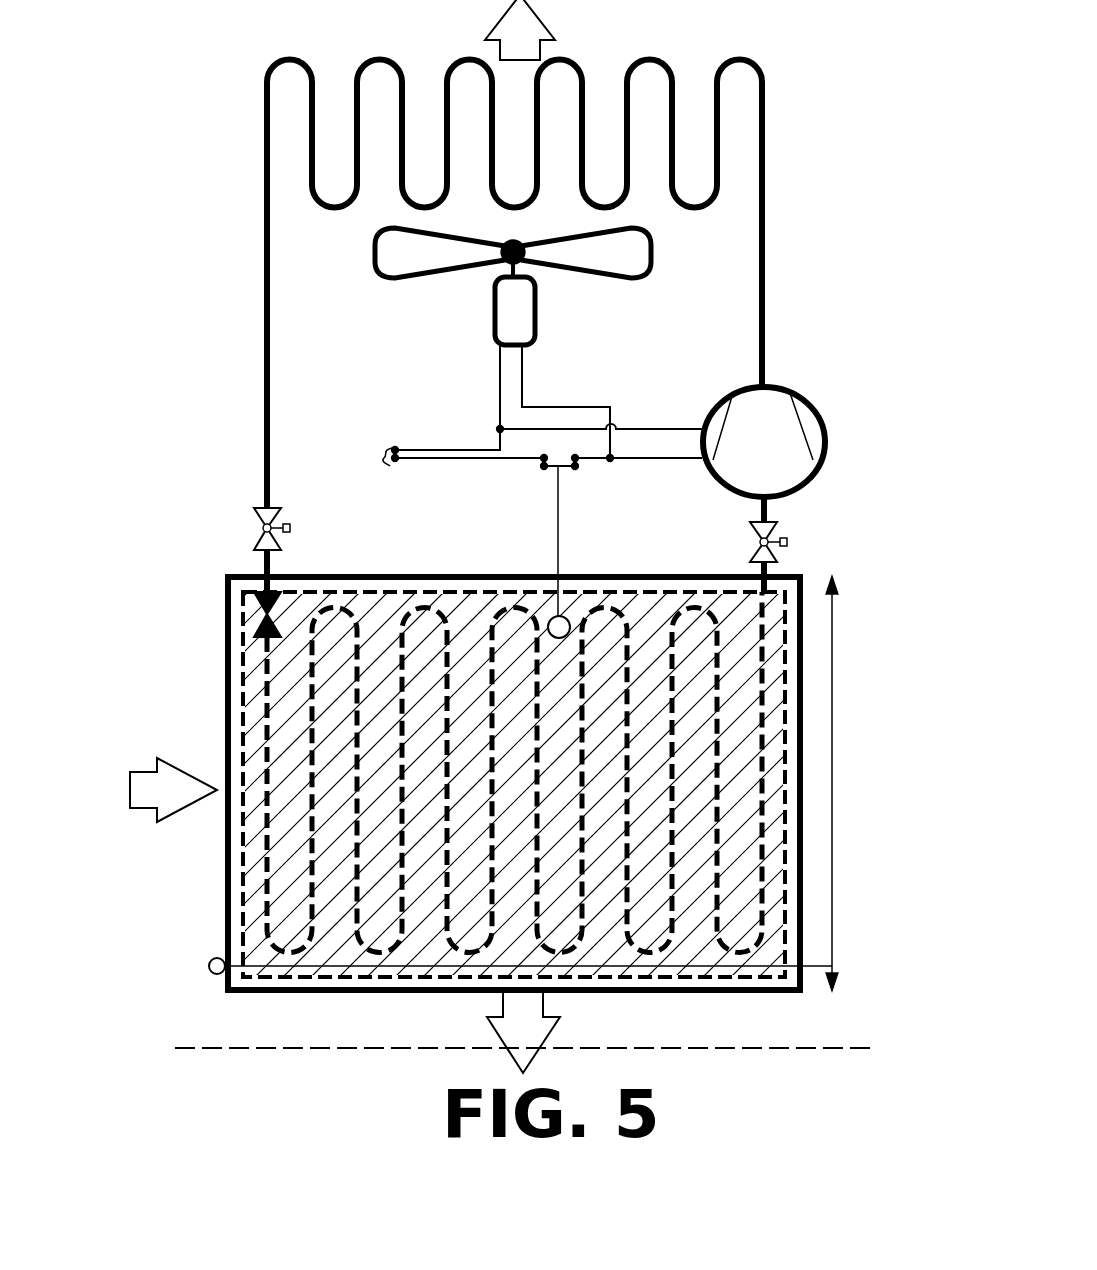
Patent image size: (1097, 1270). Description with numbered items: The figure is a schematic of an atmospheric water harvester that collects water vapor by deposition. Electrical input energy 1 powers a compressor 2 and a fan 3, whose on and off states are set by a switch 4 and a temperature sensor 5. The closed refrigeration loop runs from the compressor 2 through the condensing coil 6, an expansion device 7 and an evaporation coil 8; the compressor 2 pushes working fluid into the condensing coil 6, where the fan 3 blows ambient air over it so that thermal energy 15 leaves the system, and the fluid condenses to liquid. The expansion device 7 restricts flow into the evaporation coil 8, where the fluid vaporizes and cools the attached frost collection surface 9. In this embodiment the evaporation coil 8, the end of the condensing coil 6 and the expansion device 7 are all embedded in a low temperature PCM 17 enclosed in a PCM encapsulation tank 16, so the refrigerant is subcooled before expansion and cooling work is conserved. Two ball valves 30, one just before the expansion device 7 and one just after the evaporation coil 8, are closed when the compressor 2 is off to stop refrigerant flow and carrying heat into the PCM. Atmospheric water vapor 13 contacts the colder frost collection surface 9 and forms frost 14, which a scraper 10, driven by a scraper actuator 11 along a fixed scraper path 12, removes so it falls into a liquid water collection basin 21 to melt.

The input energy 1 is at (385, 462).
The compressor 2 is at (798, 448).
The fan 3 is at (503, 300).
The switch 4 is at (583, 465).
The temperature sensor 5 is at (550, 615).
The condensing coil 6 is at (640, 100).
The expansion device 7 is at (262, 598).
The evaporation coil 8 is at (395, 835).
The frost collection surface 9 is at (223, 942).
The scraper 10 is at (410, 968).
The scraper actuator 11 is at (209, 967).
The scraper path 12 is at (833, 811).
The water vapor 13 is at (177, 815).
The frost 14 is at (550, 1035).
The thermal energy 15 is at (532, 25).
The PCM encapsulation tank 16 is at (243, 632).
The low temperature PCM 17 is at (247, 700).
The liquid water collection basin 21 is at (790, 1047).
The ball valve 30 is at (778, 528).